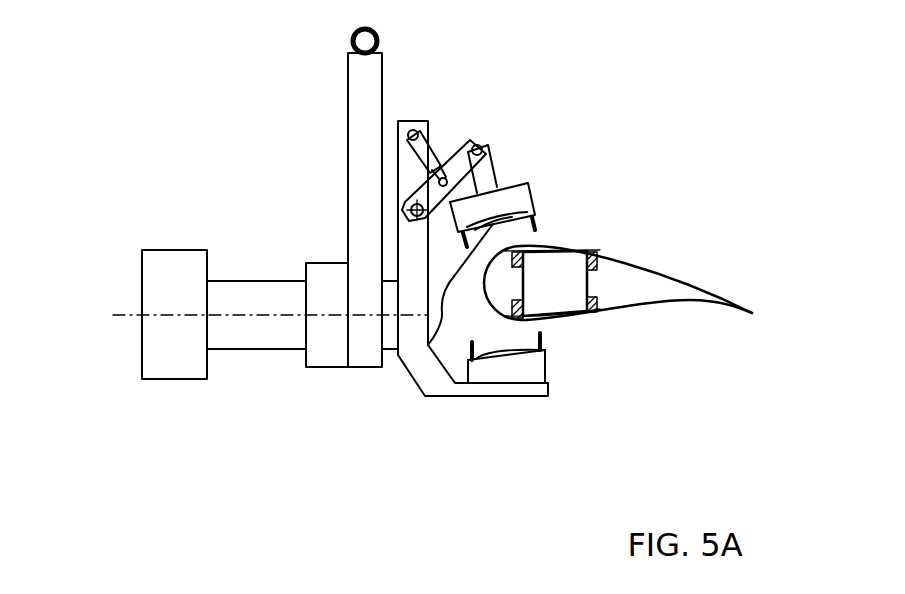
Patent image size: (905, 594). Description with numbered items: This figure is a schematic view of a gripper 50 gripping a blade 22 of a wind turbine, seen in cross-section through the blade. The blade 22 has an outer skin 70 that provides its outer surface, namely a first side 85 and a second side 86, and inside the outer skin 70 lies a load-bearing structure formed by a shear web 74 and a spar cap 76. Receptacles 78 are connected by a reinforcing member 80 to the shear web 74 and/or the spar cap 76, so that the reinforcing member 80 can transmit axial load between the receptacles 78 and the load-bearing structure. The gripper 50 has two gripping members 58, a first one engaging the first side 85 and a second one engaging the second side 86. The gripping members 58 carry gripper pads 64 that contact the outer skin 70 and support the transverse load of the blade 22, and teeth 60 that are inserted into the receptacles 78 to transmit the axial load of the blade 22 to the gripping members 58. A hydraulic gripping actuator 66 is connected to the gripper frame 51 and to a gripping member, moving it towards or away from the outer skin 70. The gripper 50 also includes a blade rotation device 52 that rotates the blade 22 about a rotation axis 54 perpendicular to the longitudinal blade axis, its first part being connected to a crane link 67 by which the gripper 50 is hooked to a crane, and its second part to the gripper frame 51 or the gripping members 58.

The blade 22 is at (724, 216).
The gripper 50 is at (222, 130).
The gripper frame 51 is at (410, 119).
The blade rotation device 52 is at (180, 249).
The rotation axis 54 is at (117, 315).
The gripping members 58 is at (532, 160).
The teeth 60 is at (537, 223).
The gripper pads 64 is at (428, 345).
The gripping actuator 66 is at (440, 139).
The crane link 67 is at (348, 83).
The outer skin 70 is at (708, 281).
The shear web 74 is at (606, 307).
The spar cap 76 is at (592, 252).
The receptacles 78 is at (598, 266).
The reinforcing member 80 is at (610, 268).
The first side 85 is at (696, 289).
The second side 86 is at (688, 307).